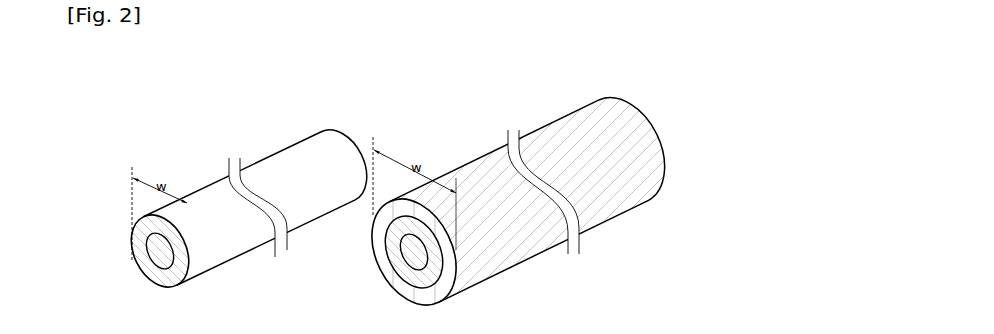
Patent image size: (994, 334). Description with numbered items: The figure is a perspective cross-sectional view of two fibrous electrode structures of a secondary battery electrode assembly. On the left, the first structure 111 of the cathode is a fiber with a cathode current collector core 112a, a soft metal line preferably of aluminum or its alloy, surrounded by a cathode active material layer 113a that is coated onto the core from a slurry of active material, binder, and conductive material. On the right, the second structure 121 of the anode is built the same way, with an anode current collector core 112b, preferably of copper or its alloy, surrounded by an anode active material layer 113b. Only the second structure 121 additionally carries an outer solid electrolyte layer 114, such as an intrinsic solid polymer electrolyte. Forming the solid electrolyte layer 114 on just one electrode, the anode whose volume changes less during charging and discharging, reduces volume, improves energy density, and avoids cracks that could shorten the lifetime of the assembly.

The first structure 111 is at (285, 147).
The cathode current collector core 112a is at (158, 250).
The cathode active material layer 113a is at (177, 286).
The second structure 121 is at (625, 100).
The anode current collector core 112b is at (411, 263).
The anode active material layer 113b is at (448, 298).
The solid electrolyte layer 114 is at (388, 268).